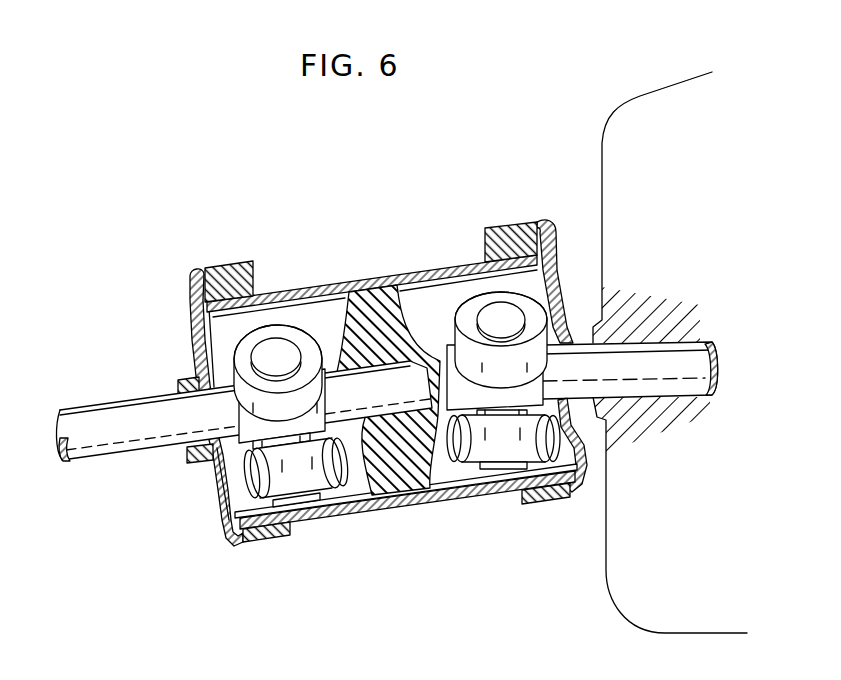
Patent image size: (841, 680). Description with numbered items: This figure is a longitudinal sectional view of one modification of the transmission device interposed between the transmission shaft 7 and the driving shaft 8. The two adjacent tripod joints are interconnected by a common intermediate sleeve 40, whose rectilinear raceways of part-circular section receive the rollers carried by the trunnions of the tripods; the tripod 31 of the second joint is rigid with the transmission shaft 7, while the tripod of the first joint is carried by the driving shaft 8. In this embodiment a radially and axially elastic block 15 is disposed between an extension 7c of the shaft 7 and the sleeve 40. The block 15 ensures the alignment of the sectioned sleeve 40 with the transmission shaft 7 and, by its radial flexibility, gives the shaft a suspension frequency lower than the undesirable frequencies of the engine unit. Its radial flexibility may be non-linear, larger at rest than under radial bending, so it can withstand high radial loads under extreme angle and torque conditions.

The transmission shaft 7 is at (102, 443).
The extension of the shaft 7c is at (366, 403).
The driving shaft 8 is at (634, 383).
The radially and axially elastic block 15 is at (370, 302).
The tripod 31 is at (257, 429).
The intermediate sleeve 40 is at (461, 272).